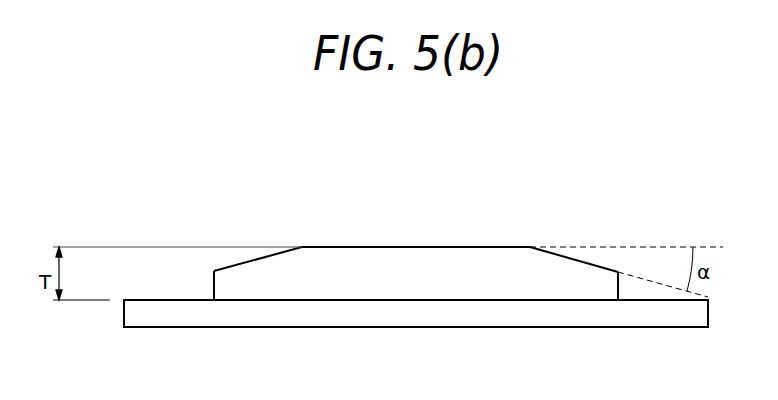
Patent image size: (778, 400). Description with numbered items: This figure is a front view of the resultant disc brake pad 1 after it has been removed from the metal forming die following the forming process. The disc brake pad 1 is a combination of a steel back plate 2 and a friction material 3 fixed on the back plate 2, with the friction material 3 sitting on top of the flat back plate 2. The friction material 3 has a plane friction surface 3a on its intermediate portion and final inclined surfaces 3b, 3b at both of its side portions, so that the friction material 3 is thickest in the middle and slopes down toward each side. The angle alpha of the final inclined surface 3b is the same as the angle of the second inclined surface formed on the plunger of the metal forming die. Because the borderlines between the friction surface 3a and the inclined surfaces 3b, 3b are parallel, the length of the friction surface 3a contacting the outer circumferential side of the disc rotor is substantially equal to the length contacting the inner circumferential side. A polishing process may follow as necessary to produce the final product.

The disc brake pad 1 is at (489, 191).
The steel back plate 2 is at (469, 315).
The friction material 3 is at (367, 265).
The friction surface 3a is at (417, 247).
The inclined surface 3b is at (247, 258).